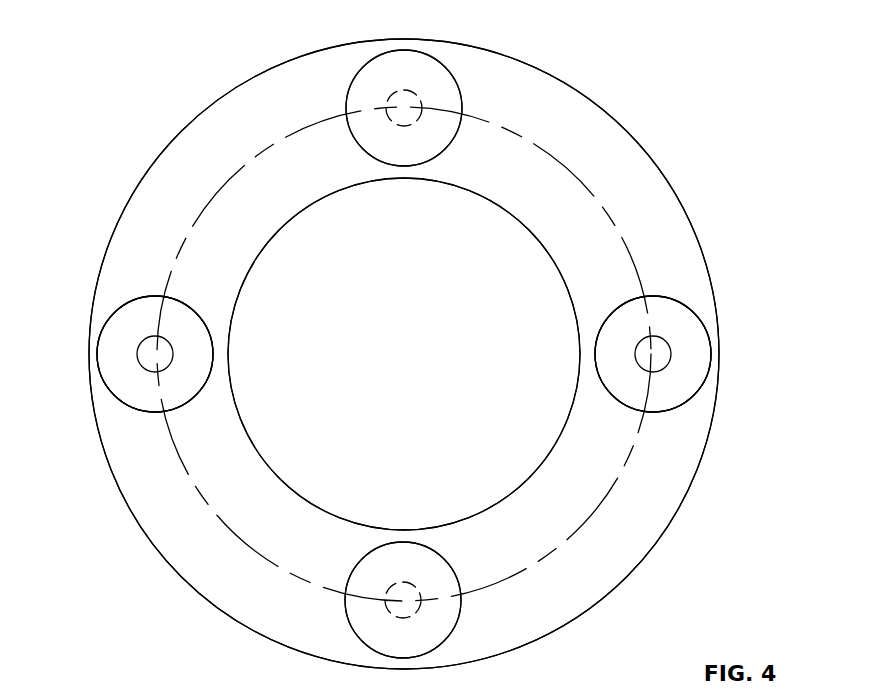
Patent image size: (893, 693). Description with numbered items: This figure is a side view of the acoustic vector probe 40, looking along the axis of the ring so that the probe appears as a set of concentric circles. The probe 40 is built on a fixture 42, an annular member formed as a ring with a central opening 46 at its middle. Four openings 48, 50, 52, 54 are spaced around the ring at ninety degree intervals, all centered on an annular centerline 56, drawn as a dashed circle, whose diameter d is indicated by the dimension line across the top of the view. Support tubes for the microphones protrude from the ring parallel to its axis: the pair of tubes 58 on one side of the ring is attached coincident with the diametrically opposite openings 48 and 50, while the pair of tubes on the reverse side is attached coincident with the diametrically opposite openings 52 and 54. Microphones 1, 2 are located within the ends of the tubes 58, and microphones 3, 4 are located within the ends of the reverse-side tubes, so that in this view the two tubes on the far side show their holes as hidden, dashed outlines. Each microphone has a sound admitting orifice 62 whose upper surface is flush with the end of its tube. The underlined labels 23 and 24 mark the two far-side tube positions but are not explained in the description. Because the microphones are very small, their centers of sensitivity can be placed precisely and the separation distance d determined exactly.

The acoustic vector probe 40 is at (706, 157).
The fixture 42 is at (208, 604).
The central opening 46 is at (268, 467).
The opening 48 is at (121, 401).
The opening 50 is at (679, 389).
The opening 52 is at (362, 78).
The opening 54 is at (368, 641).
The annular centerline 56 is at (622, 473).
The support tubes 58 is at (116, 312).
The sound admitting orifices 62 is at (142, 368).
The leg 23 is at (418, 153).
The leg 24 is at (418, 645).
The microphone 1 is at (97, 352).
The microphone 2 is at (712, 355).
The microphone 3 is at (402, 108).
The microphone 4 is at (368, 597).
The diameter d is at (653, 352).